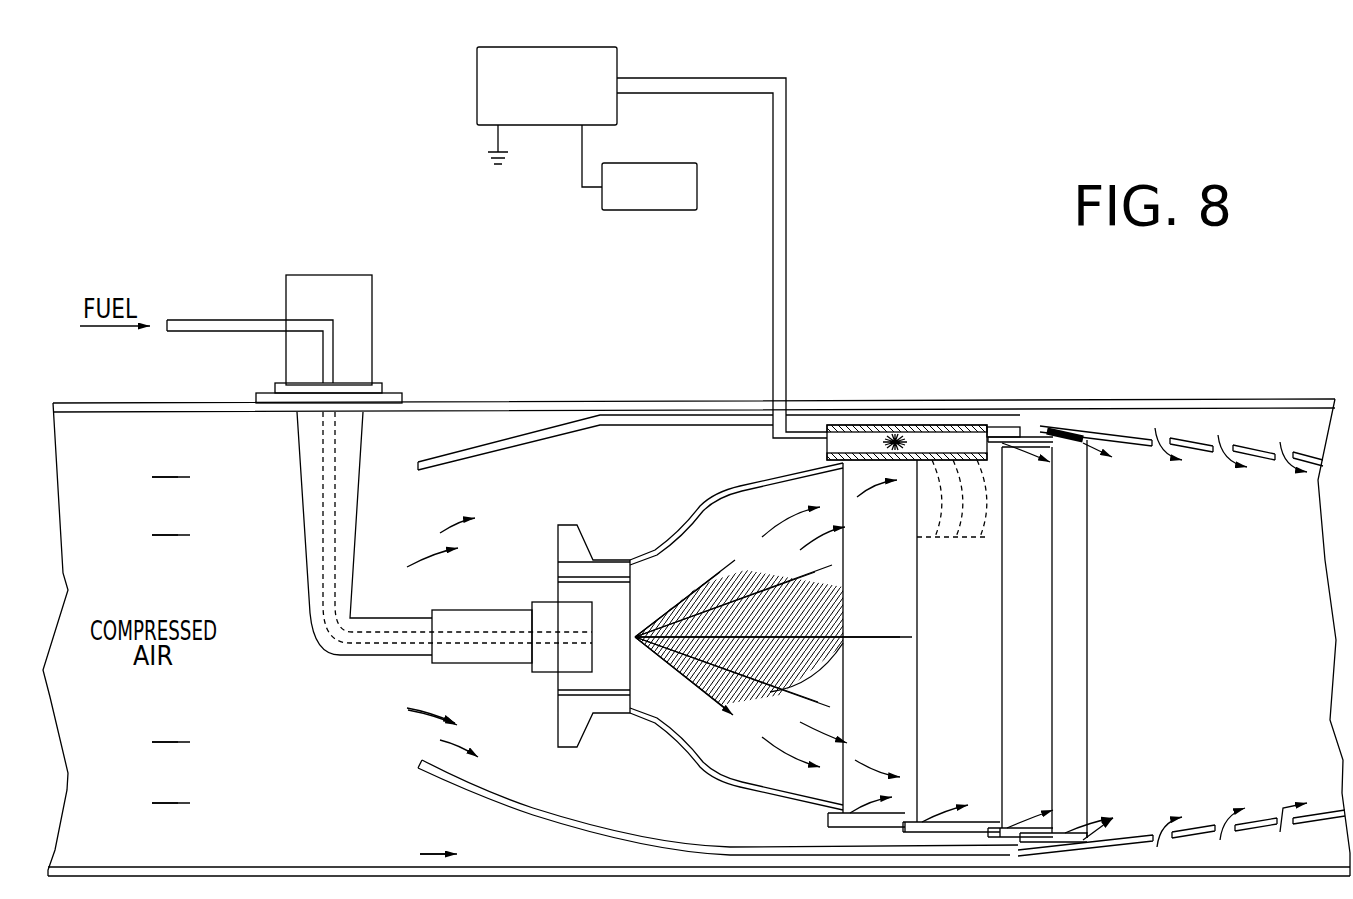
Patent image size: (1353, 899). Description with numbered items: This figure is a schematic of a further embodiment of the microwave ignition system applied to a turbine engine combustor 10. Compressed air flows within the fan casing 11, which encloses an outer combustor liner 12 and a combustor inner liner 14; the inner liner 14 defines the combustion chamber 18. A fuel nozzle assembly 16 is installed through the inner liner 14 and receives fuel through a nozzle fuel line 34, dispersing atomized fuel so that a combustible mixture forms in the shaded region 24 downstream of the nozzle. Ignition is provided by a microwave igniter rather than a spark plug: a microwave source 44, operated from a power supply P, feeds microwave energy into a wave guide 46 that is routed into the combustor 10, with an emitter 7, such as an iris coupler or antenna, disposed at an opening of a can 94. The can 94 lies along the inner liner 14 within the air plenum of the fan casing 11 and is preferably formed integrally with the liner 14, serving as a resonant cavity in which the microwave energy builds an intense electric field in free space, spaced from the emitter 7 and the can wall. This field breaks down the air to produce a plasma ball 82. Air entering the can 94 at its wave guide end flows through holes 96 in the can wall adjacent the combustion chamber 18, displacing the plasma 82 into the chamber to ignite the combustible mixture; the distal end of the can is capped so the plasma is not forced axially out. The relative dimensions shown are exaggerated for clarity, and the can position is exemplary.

The microwave emitter 7 is at (803, 435).
The combustor 10 is at (373, 755).
The fan casing 11 is at (128, 402).
The outer combustor liner 12 is at (465, 790).
The combustor inner liner 14 is at (775, 790).
The fuel nozzle assembly 16 is at (538, 592).
The combustion chamber 18 is at (1225, 640).
The shaded region 24 is at (817, 670).
The nozzle fuel line 34 is at (232, 332).
The microwave source 44 is at (537, 47).
The wave guide 46 is at (683, 78).
The power supply P is at (618, 163).
The plasma ball 82 is at (923, 442).
The can 94 is at (997, 427).
The holes 96 is at (930, 537).